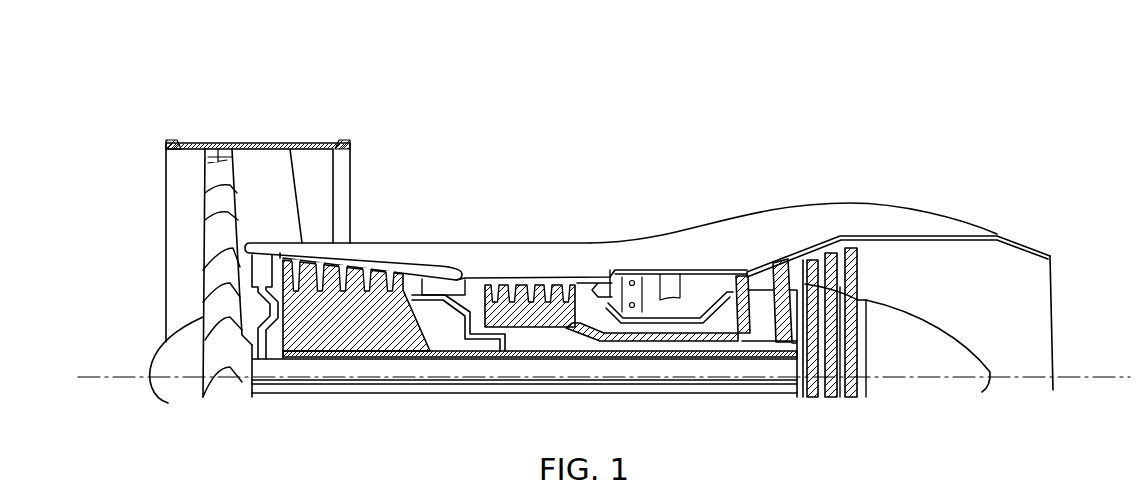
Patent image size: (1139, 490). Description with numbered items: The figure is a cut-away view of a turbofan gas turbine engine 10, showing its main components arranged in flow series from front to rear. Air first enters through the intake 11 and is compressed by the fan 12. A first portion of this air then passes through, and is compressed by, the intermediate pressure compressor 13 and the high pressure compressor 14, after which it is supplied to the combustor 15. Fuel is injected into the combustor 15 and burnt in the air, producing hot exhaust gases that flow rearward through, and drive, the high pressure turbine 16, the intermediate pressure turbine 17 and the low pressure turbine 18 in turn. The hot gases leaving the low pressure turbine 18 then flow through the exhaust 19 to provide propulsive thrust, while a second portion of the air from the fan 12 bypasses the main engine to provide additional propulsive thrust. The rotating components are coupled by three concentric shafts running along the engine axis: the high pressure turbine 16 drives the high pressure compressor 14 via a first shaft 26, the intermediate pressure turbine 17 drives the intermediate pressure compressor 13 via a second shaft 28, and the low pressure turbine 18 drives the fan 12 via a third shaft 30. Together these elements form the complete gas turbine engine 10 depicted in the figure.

The turbofan gas turbine engine 10 is at (510, 167).
The intake 11 is at (142, 258).
The fan 12 is at (217, 147).
The intermediate pressure compressor 13 is at (370, 272).
The high pressure compressor 14 is at (523, 283).
The combustor 15 is at (671, 258).
The high pressure turbine 16 is at (742, 275).
The intermediate pressure turbine 17 is at (780, 266).
The low pressure turbine 18 is at (831, 252).
The exhaust 19 is at (1038, 323).
The first shaft 26 is at (724, 358).
The second shaft 28 is at (477, 358).
The third shaft 30 is at (397, 397).